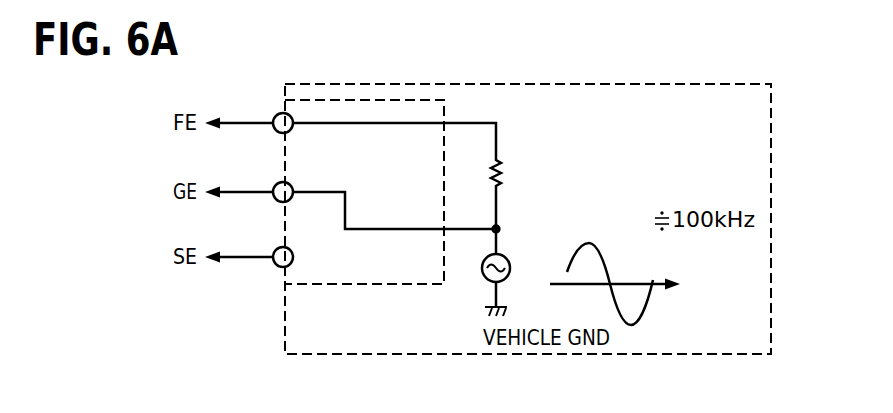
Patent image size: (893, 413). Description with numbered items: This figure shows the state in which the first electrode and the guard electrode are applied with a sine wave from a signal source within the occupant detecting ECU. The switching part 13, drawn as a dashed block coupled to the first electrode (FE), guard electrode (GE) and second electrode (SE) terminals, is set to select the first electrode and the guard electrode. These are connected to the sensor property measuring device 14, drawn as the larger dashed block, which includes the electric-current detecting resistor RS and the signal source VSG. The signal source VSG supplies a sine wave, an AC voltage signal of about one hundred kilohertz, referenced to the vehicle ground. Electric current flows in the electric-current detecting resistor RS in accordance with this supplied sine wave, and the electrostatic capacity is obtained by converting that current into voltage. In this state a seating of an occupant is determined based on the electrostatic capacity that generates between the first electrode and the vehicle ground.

The switching part 13 is at (307, 284).
The sensor property measuring device 14 is at (703, 83).
The electric-current detecting resistor RS is at (502, 178).
The signal source VSG is at (505, 258).